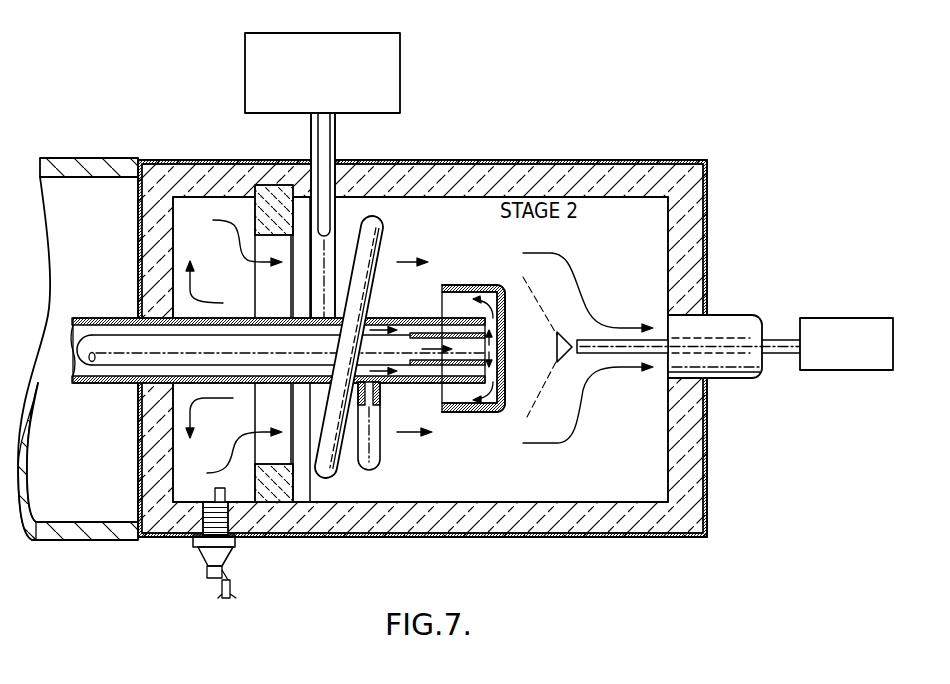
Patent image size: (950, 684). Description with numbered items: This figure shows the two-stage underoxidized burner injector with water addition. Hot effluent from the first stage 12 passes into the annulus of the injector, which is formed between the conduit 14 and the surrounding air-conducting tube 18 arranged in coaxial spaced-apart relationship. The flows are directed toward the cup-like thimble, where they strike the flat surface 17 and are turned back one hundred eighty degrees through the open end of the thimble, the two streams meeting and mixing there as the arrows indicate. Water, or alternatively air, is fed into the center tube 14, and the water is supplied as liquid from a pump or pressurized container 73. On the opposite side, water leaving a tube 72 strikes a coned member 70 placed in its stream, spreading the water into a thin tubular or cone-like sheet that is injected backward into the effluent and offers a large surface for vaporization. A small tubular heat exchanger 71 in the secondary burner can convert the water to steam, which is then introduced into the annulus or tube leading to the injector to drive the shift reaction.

The first stage 12 is at (99, 280).
The conduit 14 is at (225, 348).
The flat surface 17 is at (505, 300).
The air-conducting tube 18 is at (110, 383).
The coned member 70 is at (569, 358).
The tubular heat exchanger 71 is at (382, 229).
The tube 72 is at (782, 336).
The pressurized container 73 is at (400, 68).